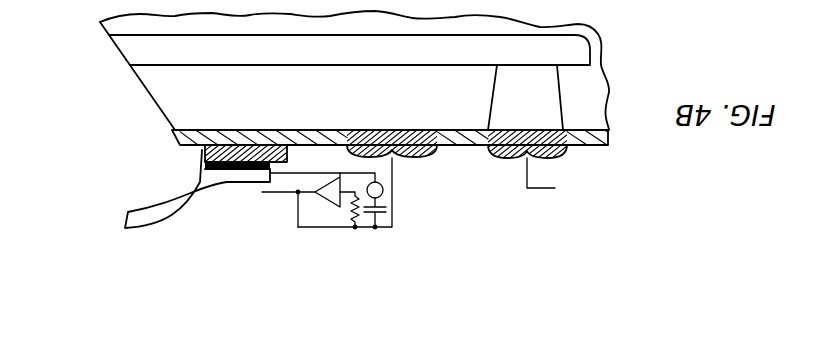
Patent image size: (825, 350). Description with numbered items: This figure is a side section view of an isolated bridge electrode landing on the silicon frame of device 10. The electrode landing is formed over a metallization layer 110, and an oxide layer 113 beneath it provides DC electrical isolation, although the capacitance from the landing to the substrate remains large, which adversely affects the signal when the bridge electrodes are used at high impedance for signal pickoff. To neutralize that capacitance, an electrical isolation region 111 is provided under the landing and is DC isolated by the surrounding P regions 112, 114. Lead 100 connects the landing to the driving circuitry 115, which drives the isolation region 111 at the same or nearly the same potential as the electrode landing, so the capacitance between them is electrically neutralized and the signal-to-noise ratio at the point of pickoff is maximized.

The photodetector device 10 is at (733, 0).
The contact lead 100 is at (215, 180).
The metallization layer 110 is at (205, 155).
The electrical isolation region 111 is at (370, 90).
The P region 112 is at (349, 50).
The oxide layer 113 is at (172, 135).
The P region 114 is at (525, 97).
The amplifier circuit 115 is at (322, 200).